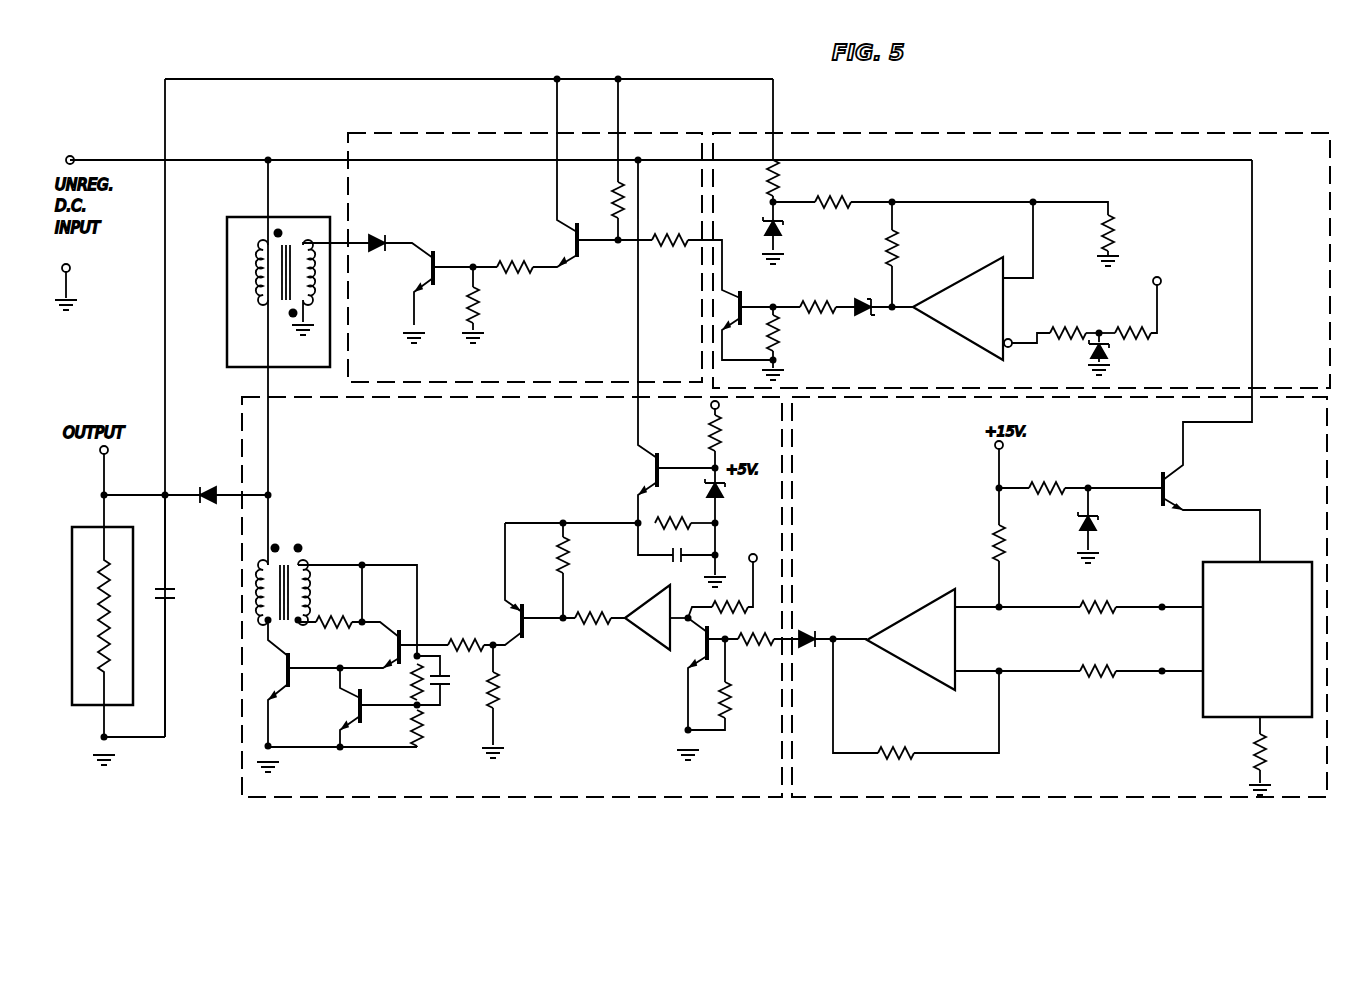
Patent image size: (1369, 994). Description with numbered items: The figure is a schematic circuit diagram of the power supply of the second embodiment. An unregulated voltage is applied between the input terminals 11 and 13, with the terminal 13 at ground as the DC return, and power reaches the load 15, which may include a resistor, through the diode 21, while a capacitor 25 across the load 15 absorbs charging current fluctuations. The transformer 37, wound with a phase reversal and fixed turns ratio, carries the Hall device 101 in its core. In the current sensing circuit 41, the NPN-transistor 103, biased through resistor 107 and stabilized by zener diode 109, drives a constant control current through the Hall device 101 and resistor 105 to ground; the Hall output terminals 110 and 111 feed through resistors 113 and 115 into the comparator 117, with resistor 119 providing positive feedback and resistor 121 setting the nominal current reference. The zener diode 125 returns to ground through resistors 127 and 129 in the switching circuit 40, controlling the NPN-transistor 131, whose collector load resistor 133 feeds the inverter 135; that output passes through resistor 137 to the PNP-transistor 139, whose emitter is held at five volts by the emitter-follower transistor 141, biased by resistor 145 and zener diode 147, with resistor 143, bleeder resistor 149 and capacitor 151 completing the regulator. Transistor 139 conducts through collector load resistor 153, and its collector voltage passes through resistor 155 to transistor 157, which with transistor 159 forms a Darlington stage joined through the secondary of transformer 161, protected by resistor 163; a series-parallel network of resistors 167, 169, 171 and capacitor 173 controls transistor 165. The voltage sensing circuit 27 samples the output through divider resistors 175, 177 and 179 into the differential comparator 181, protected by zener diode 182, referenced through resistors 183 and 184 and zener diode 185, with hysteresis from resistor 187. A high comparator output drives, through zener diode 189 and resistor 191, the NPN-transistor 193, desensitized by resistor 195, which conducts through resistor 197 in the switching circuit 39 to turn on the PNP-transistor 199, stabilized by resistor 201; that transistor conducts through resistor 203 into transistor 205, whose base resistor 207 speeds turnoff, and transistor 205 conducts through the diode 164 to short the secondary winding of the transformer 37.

The input terminal 11 is at (73, 156).
The input terminal 13 is at (70, 267).
The load 15 is at (80, 530).
The diode 21 is at (212, 490).
The capacitor 25 is at (172, 593).
The voltage sensing circuit 27 is at (1207, 142).
The transformer 37 is at (227, 272).
The switching circuit 39 is at (455, 133).
The switching circuit 40 is at (437, 788).
The current sensing circuit 41 is at (883, 788).
The Hall device 101 is at (1300, 551).
The NPN-transistor 103 is at (1168, 490).
The resistor 105 is at (1251, 750).
The resistor 107 is at (1050, 483).
The zener diode 109 is at (1097, 524).
The output terminal 110 is at (1164, 603).
The output terminal 111 is at (1164, 667).
The resistor 113 is at (1095, 603).
The resistor 115 is at (1095, 667).
The comparator 117 is at (913, 618).
The resistor 119 is at (898, 749).
The resistor 121 is at (1005, 546).
The zener diode 125 is at (810, 630).
The resistor 127 is at (756, 650).
The resistor 129 is at (725, 702).
The NPN-transistor 131 is at (699, 649).
The resistor 133 is at (726, 604).
The inverter 135 is at (661, 648).
The resistor 137 is at (598, 612).
The PNP-transistor 139 is at (528, 608).
The transistor 141 is at (652, 468).
The resistor 143 is at (573, 560).
The resistor 145 is at (727, 445).
The zener diode 147 is at (727, 492).
The bleeder resistor 149 is at (675, 516).
The capacitor 151 is at (672, 554).
The collector load resistor 153 is at (505, 690).
The resistor 155 is at (474, 638).
The transistor 157 is at (412, 626).
The transistor 159 is at (283, 668).
The transformer 161 is at (290, 546).
The resistor 163 is at (330, 613).
The diode 164 is at (373, 236).
The transistor 165 is at (355, 705).
The resistor 167 is at (409, 676).
The resistor 169 is at (420, 732).
The resistor 171 is at (447, 687).
The capacitor 173 is at (447, 677).
The resistor 175 is at (783, 184).
The resistor 177 is at (850, 200).
The resistor 179 is at (1116, 238).
The differential comparator 181 is at (985, 270).
The zener diode 182 is at (783, 236).
The resistor 183 is at (1075, 326).
The resistor 184 is at (1133, 326).
The zener diode 185 is at (1090, 359).
The resistor 187 is at (900, 250).
The zener diode 189 is at (863, 300).
The resistor 191 is at (810, 302).
The NPN-transistor 193 is at (745, 302).
The resistor 195 is at (782, 347).
The resistor 197 is at (665, 252).
The PNP-transistor 199 is at (583, 230).
The resistor 201 is at (636, 200).
The resistor 203 is at (523, 258).
The transistor 205 is at (443, 262).
The resistor 207 is at (483, 309).